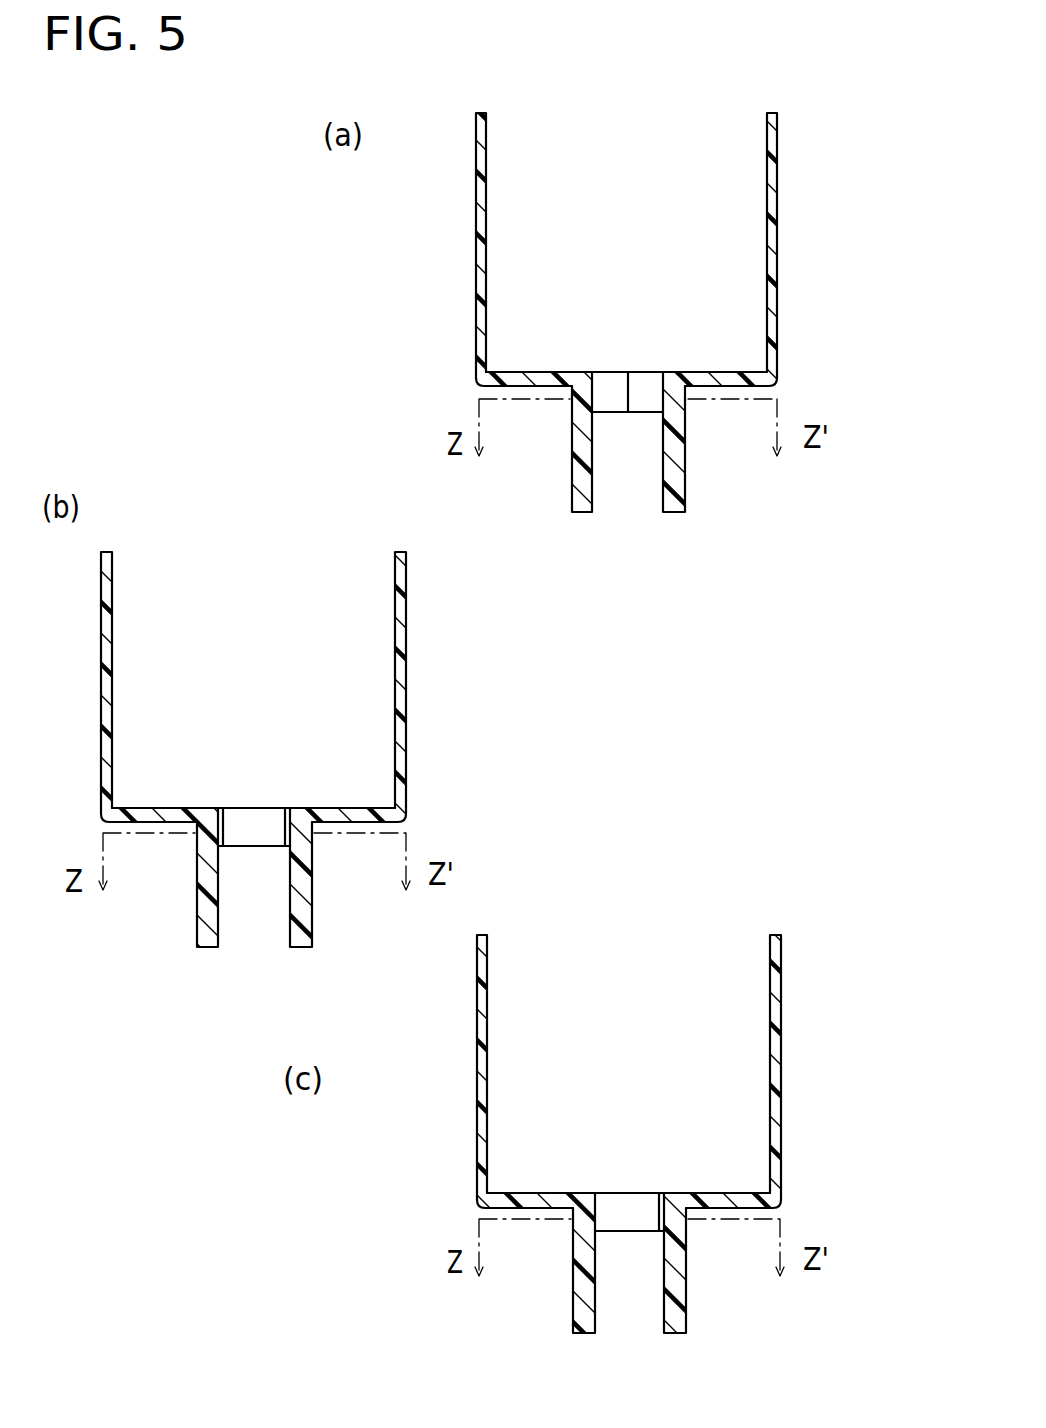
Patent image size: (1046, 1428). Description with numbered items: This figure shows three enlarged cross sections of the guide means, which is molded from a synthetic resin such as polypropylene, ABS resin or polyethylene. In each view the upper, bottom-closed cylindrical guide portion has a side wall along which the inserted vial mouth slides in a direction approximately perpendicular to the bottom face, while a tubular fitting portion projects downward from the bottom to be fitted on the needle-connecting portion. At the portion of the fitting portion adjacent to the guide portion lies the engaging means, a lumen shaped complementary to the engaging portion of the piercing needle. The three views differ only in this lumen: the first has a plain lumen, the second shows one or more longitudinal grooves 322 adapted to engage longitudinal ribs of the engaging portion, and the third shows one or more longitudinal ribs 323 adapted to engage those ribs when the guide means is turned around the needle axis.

The longitudinal groove 322 is at (287, 803).
The longitudinal rib 323 is at (645, 1195).